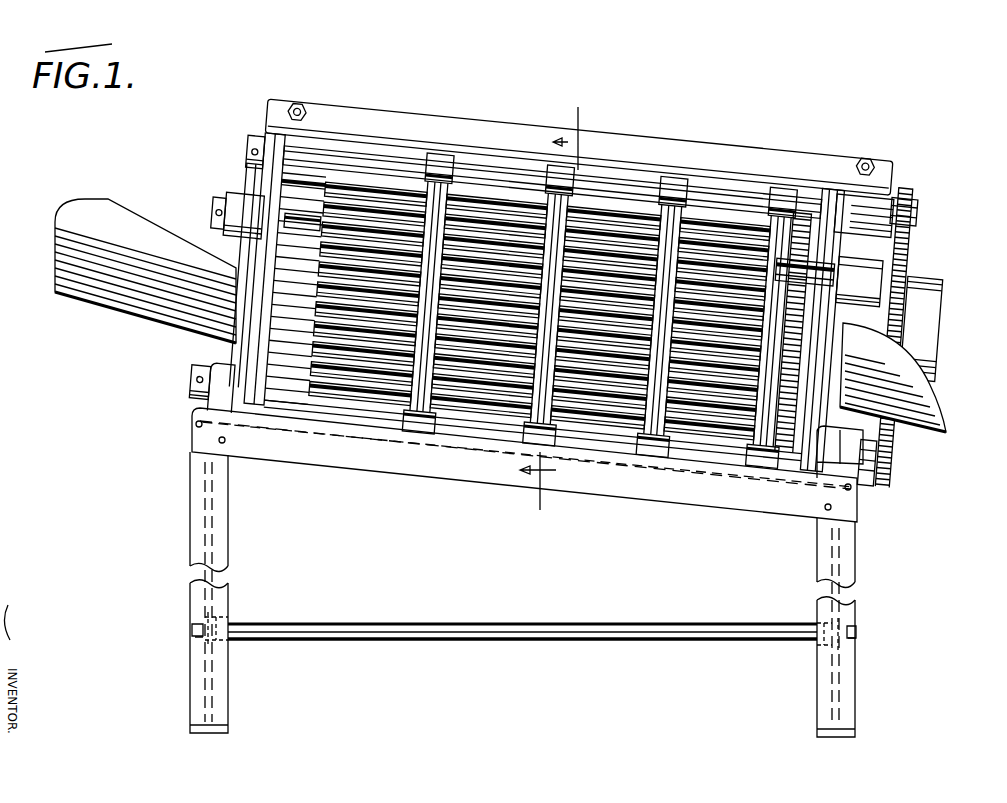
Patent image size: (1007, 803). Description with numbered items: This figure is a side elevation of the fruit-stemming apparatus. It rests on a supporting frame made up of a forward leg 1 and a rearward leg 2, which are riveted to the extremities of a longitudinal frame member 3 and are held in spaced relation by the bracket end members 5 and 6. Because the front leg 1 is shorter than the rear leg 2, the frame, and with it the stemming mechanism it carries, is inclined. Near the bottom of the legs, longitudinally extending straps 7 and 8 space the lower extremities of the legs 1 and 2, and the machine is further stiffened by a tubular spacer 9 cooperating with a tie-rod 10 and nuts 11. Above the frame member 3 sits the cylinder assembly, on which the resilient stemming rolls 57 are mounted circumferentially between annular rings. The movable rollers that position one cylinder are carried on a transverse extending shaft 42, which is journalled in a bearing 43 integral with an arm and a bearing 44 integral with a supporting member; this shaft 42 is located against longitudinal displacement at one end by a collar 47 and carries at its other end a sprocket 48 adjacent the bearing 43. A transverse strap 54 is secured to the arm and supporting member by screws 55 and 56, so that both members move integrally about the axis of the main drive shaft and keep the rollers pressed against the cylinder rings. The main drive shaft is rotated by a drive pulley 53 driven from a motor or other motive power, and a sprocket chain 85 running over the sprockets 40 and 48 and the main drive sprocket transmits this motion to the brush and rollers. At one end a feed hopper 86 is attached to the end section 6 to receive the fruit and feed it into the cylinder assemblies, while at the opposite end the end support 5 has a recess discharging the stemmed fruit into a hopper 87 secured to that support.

The forward leg 1 is at (848, 703).
The rearward leg 2 is at (217, 675).
The longitudinal frame member 3 is at (637, 486).
The bracket end member 5 is at (850, 472).
The bracket end member 6 is at (228, 352).
The longitudinally extending strap 7 is at (828, 622).
The longitudinally extending strap 8 is at (218, 617).
The tubular spacer 9 is at (476, 642).
The tie-rod 10 is at (200, 637).
The nut 11 is at (198, 622).
The sprocket 40 is at (867, 453).
The transverse extending shaft 42 is at (622, 190).
The bearing 43 is at (277, 142).
The bearing 44 is at (878, 212).
The collar 47 is at (252, 158).
The sprocket 48 is at (915, 210).
The drive pulley 53 is at (932, 293).
The transverse strap 54 is at (752, 143).
The screw 55 is at (868, 163).
The screw 56 is at (303, 105).
The resilient stemming roll 57 is at (723, 413).
The sprocket chain 85 is at (910, 242).
The feed hopper 86 is at (108, 297).
The discharge hopper 87 is at (927, 410).